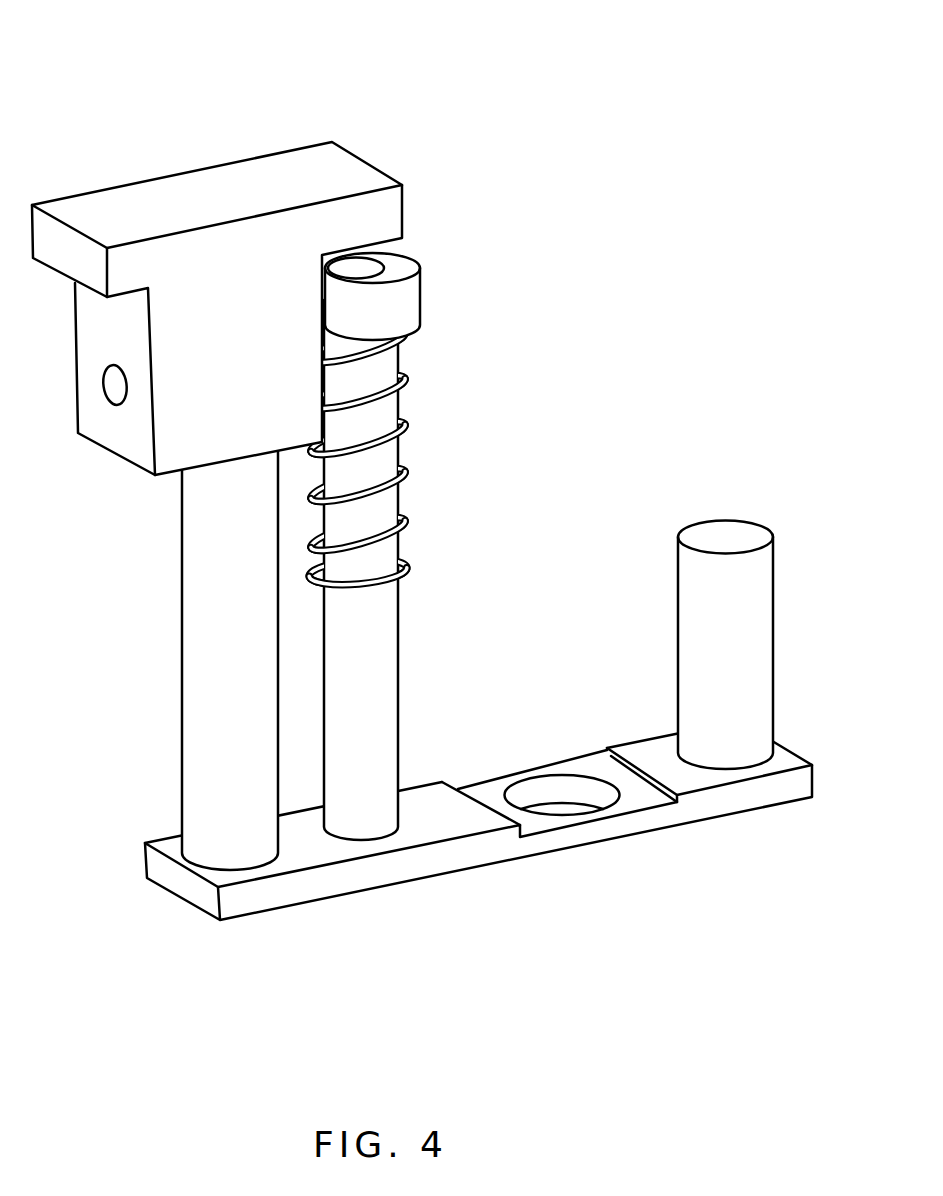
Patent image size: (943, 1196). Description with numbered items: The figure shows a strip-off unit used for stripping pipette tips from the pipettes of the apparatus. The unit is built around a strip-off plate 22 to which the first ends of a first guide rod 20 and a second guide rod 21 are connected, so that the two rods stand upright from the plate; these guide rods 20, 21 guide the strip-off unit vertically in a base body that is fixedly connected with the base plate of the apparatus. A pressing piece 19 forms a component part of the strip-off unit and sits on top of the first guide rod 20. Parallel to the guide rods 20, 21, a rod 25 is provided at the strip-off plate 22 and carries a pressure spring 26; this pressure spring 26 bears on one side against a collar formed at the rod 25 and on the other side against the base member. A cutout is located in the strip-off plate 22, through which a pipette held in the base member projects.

The pressing piece 19 is at (252, 263).
The first guide rod 20 is at (212, 653).
The second guide rod 21 is at (725, 647).
The strip-off plate 22 is at (472, 862).
The rod 25 is at (407, 305).
The pressure spring 26 is at (407, 473).